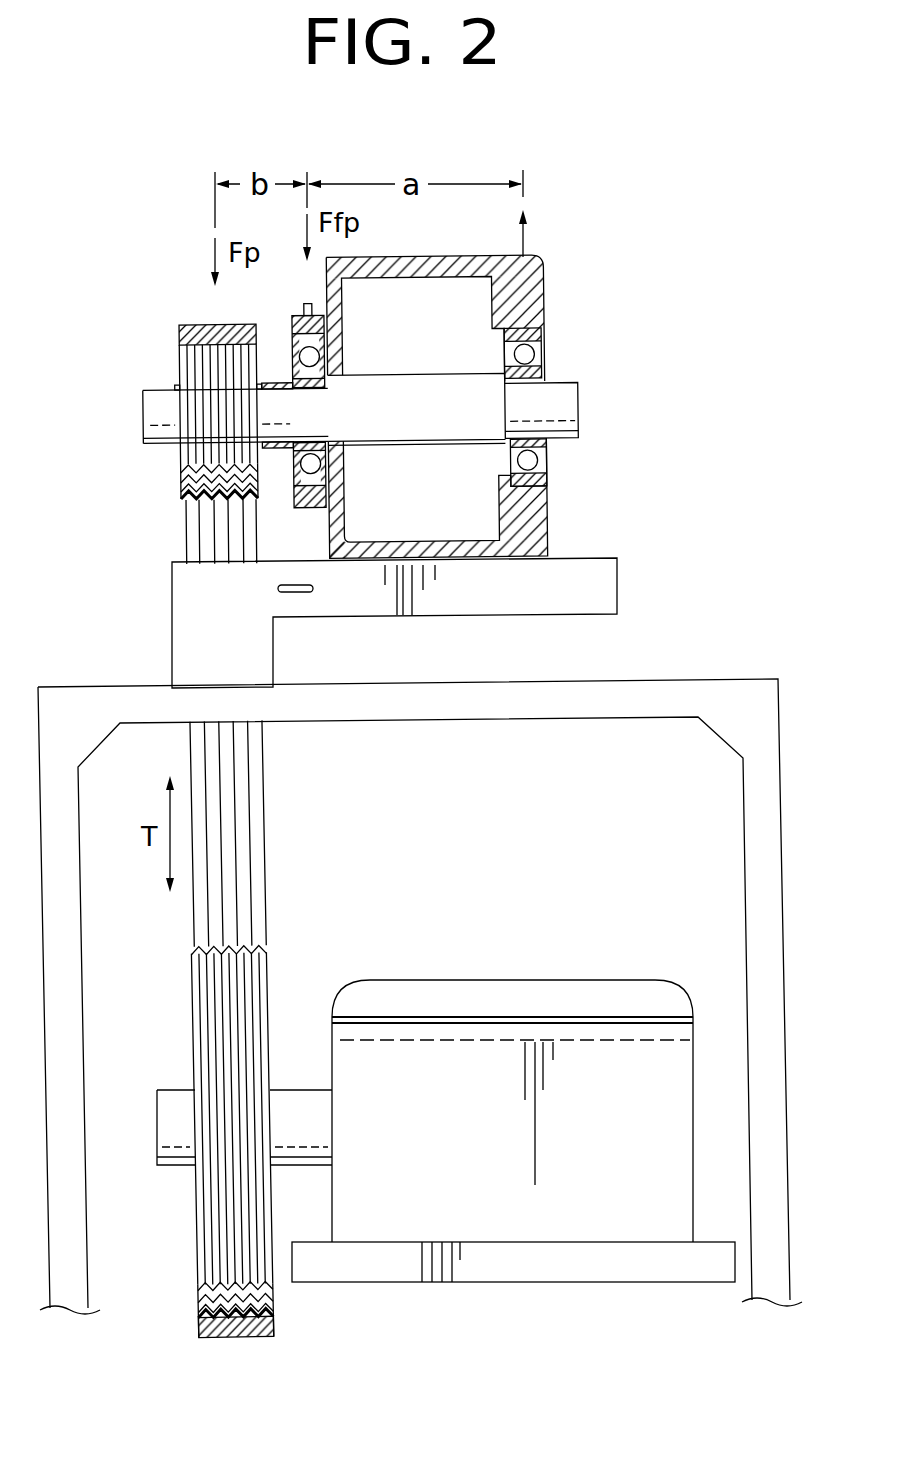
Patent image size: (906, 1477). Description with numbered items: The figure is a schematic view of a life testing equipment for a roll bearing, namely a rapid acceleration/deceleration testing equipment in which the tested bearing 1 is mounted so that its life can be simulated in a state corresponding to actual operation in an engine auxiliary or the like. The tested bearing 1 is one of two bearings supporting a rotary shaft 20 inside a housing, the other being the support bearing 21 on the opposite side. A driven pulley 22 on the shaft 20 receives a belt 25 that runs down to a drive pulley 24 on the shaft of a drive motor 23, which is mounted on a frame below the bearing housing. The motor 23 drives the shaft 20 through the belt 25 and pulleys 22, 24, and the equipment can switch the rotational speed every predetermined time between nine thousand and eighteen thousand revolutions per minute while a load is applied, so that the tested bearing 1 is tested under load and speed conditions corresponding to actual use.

The tested bearing 1 is at (312, 462).
The rotary shaft 20 is at (422, 383).
The support bearing 21 is at (535, 356).
The driven pulley 22 is at (183, 482).
The drive motor 23 is at (535, 1012).
The drive pulley 24 is at (266, 993).
The belt 25 is at (263, 850).